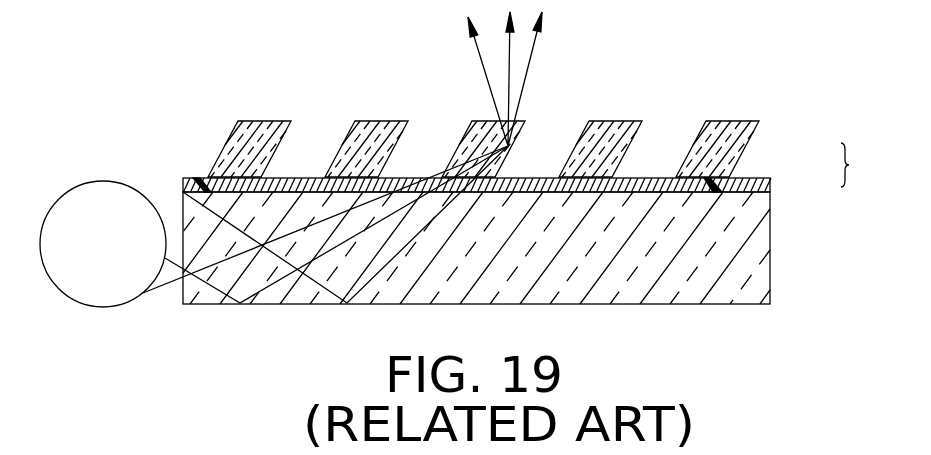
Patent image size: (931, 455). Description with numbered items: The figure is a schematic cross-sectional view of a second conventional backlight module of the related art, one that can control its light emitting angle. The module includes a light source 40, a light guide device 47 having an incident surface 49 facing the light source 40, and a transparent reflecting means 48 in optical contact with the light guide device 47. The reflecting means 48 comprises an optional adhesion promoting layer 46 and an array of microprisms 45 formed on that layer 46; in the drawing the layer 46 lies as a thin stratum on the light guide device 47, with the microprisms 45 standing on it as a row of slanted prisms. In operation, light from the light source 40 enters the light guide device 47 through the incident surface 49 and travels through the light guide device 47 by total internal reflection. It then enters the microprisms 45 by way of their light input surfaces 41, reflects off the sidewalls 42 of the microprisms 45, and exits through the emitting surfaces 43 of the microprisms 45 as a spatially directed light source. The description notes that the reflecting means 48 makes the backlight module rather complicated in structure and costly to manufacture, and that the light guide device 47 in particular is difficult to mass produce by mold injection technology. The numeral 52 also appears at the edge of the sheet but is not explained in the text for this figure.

The light source 40 is at (87, 227).
The light input surface 41 is at (718, 193).
The sidewall 42 is at (753, 138).
The emitting surface 43 is at (733, 121).
The microprism 45 is at (728, 148).
The adhesion promoting layer 46 is at (770, 180).
The light guide device 47 is at (742, 252).
The transparent reflecting means 48 is at (862, 165).
The incident surface 49 is at (182, 205).
The light guide element 52 is at (190, 447).